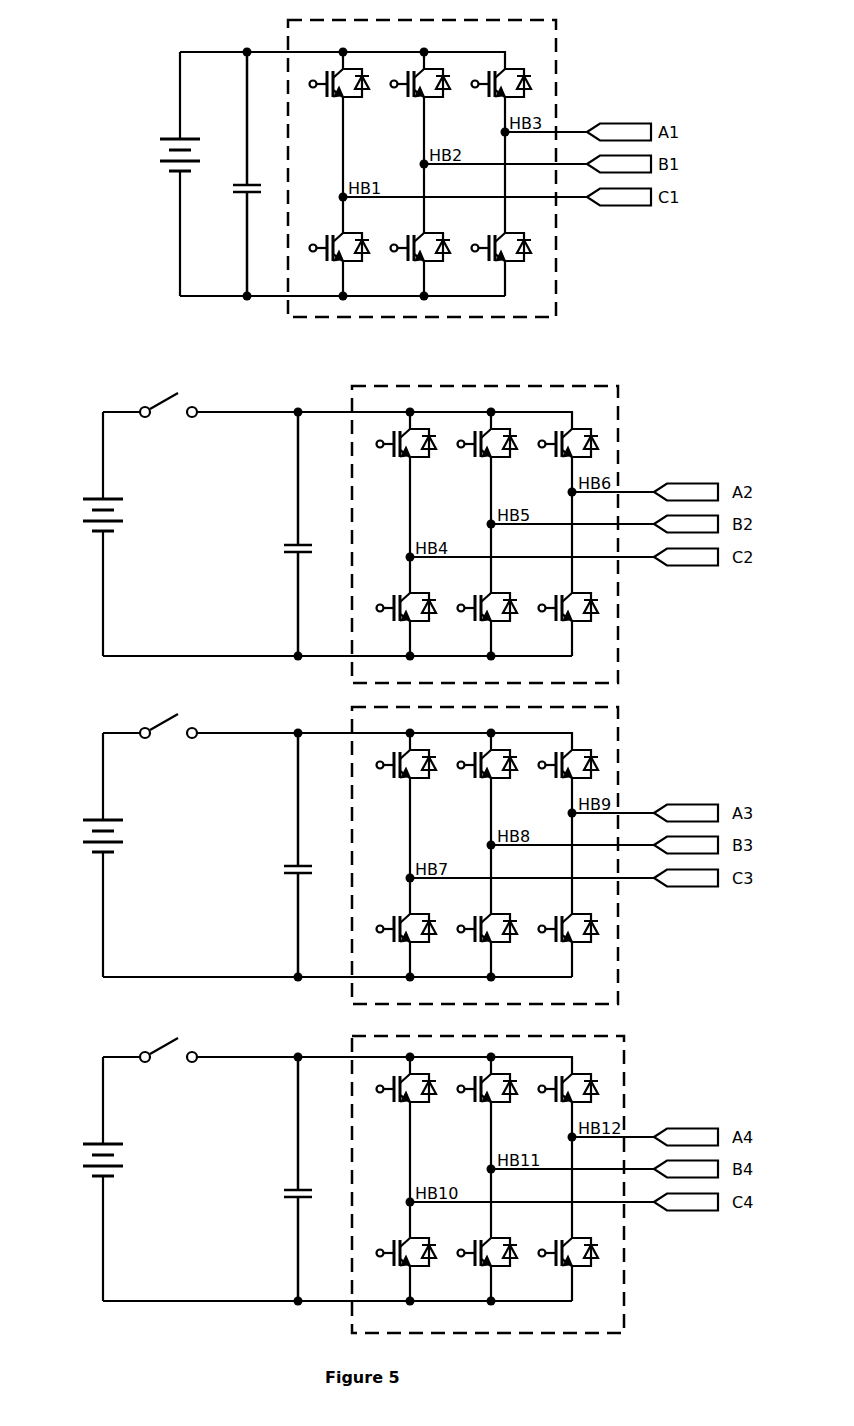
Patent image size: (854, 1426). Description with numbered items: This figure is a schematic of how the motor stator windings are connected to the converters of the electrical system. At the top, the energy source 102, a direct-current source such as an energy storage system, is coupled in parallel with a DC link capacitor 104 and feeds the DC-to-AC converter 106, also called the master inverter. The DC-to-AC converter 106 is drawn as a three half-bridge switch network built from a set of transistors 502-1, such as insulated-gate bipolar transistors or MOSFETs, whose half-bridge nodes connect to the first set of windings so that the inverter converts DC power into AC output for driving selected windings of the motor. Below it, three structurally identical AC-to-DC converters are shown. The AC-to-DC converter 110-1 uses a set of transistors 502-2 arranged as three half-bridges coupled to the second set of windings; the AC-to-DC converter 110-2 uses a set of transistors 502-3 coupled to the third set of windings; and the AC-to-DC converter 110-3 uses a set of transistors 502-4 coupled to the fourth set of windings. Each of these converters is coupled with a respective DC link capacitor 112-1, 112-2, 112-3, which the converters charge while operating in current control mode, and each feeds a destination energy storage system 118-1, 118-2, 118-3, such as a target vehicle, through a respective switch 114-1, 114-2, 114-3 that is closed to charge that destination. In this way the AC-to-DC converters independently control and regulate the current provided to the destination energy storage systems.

The energy source 102 is at (163, 156).
The capacitor 104 is at (234, 186).
The DC-to-AC converter 106 is at (288, 40).
The set of transistors 502-1 is at (513, 266).
The AC-to-DC converter 110-1 is at (352, 403).
The capacitor 112-1 is at (284, 547).
The switch 114-1 is at (163, 401).
The destination ESS 118-1 is at (83, 512).
The set of transistors 502-2 is at (580, 624).
The AC-to-DC converter 110-2 is at (352, 724).
The capacitor 112-2 is at (284, 868).
The switch 114-2 is at (163, 722).
The destination ESS 118-2 is at (83, 833).
The set of transistors 502-3 is at (580, 945).
The AC-to-DC converter 110-3 is at (352, 1050).
The capacitor 112-3 is at (284, 1192).
The switch 114-3 is at (163, 1046).
The destination ESS 118-3 is at (83, 1157).
The set of transistors 502-4 is at (580, 1270).